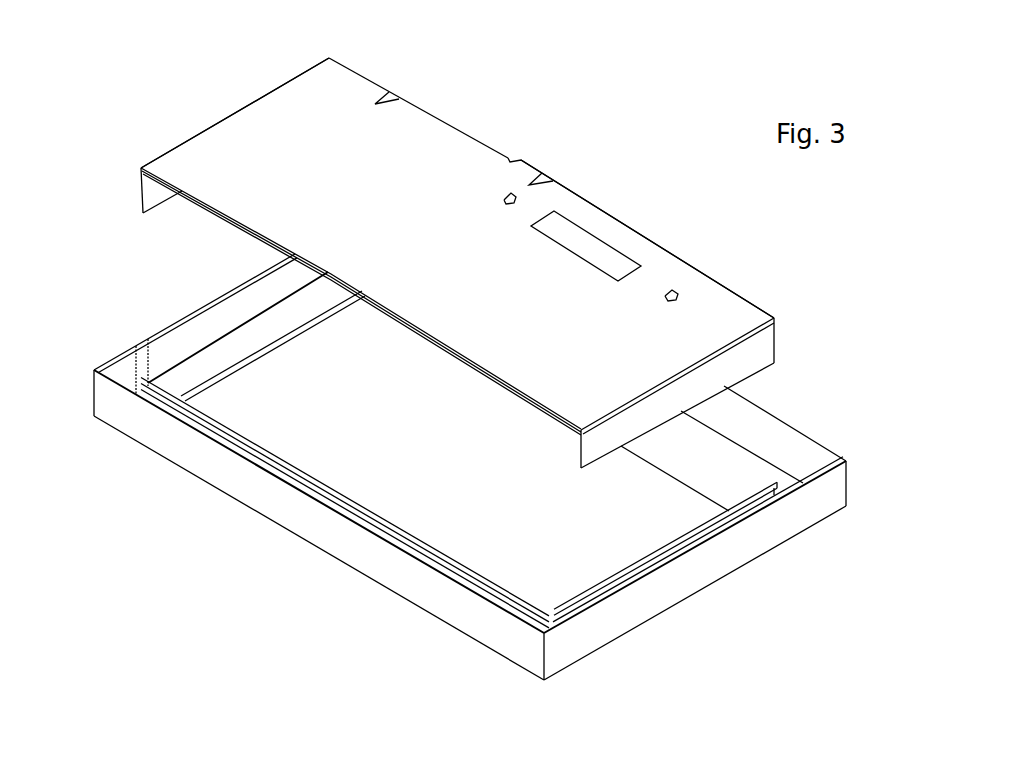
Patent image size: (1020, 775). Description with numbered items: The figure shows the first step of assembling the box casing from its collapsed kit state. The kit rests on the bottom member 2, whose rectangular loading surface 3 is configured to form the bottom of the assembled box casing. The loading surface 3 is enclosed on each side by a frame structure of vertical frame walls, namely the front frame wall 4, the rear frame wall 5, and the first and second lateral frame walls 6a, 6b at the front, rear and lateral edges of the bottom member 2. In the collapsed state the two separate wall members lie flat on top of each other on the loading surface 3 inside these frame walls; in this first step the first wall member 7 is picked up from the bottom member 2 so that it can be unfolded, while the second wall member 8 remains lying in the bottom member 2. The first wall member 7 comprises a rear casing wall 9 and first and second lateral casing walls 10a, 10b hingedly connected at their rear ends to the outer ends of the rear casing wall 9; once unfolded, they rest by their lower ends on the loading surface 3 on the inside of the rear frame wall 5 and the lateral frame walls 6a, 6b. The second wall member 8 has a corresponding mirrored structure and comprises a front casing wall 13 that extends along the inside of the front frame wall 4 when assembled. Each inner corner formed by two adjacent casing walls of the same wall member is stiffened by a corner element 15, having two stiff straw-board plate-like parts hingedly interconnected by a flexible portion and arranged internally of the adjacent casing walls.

The bottom member 2 is at (630, 627).
The loading surface 3 is at (721, 462).
The front frame wall 4 is at (315, 520).
The rear frame wall 5 is at (798, 447).
The first lateral frame wall 6a is at (715, 550).
The second lateral frame wall 6b is at (115, 362).
The first wall member 7 is at (436, 115).
The second wall member 8 is at (206, 418).
The rear casing wall 9 is at (205, 205).
The first lateral casing wall 10a is at (255, 133).
The second lateral casing wall 10b is at (700, 317).
The front casing wall 13 is at (396, 477).
The corner element 15 is at (608, 418).